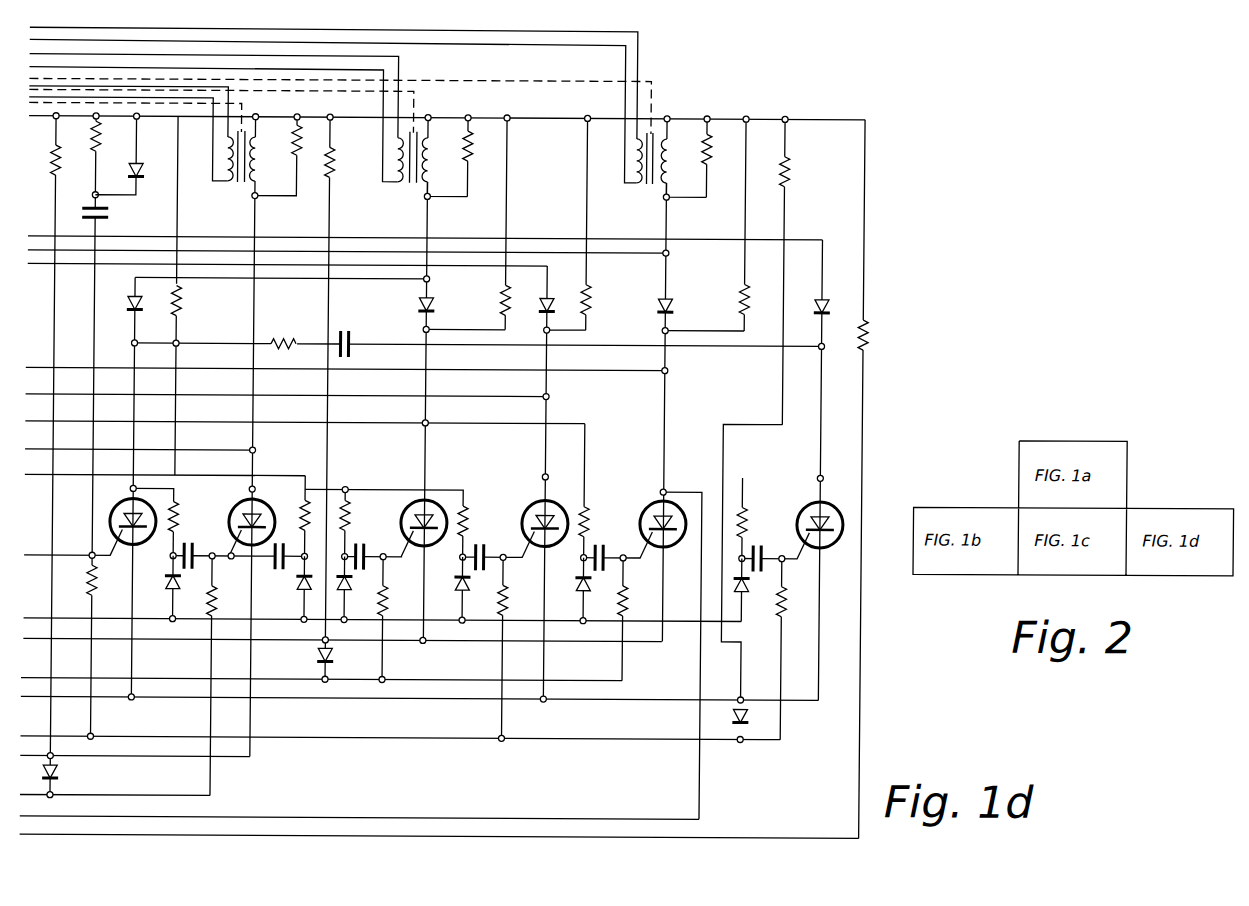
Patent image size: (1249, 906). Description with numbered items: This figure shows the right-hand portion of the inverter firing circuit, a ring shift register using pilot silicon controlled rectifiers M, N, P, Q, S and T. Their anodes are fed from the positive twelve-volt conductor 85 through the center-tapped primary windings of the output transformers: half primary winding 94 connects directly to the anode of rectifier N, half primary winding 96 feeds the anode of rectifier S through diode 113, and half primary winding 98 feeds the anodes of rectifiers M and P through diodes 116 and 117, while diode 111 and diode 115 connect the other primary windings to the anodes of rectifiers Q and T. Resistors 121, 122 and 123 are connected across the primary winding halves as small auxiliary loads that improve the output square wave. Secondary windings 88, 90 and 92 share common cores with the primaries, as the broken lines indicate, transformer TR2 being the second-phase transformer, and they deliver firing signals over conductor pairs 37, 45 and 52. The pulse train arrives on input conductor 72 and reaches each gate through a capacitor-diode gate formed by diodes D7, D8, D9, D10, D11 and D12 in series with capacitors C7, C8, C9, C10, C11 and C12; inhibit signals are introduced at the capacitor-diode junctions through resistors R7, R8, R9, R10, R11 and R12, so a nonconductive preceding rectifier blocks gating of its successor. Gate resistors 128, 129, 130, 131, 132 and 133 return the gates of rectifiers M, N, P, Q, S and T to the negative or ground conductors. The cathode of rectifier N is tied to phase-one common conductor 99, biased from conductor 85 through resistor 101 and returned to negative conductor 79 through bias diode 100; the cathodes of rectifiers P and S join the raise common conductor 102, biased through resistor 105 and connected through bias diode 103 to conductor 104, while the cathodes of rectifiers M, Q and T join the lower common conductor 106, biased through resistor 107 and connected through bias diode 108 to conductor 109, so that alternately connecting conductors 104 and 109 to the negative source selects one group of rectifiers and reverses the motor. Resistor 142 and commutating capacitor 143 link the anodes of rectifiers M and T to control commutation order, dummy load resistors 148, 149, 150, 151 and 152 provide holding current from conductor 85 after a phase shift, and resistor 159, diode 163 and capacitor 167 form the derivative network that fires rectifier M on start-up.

The conductor pair 45 is at (643, 39).
The conductor pair 52 is at (398, 58).
The pair of conductors 37 is at (239, 88).
The output transformer TR2 is at (548, 80).
The positive conductor 85 is at (541, 116).
The resistor 101 is at (51, 166).
The resistor 159 is at (90, 156).
The diode 163 is at (138, 168).
The capacitor 167 is at (118, 215).
The secondary winding 88 is at (225, 183).
The half primary winding 94 is at (258, 156).
The resistor 121 is at (292, 160).
The bias resistor 105 is at (332, 178).
The secondary winding 92 is at (395, 183).
The half primary winding 98 is at (430, 168).
The resistor 122 is at (470, 155).
The secondary winding 90 is at (634, 183).
The half primary winding 96 is at (668, 168).
The resistor 123 is at (706, 155).
The bias resistor 107 is at (792, 170).
The diode 116 is at (131, 294).
The dummy load resistor 148 is at (184, 300).
The resistor 142 is at (284, 331).
The commutating capacitor 143 is at (343, 329).
The diode 117 is at (419, 301).
The dummy load resistor 149 is at (498, 297).
The diode 111 is at (552, 302).
The dummy load resistor 150 is at (590, 290).
The diode 113 is at (658, 306).
The dummy load resistor 151 is at (738, 296).
The diode 115 is at (826, 304).
The dummy load resistor 152 is at (869, 318).
The pilot silicon controlled rectifier M is at (123, 497).
The pilot silicon controlled rectifier N is at (244, 498).
The pilot silicon controlled rectifier P is at (405, 508).
The pilot silicon controlled rectifier Q is at (540, 499).
The pilot silicon controlled rectifier S is at (660, 497).
The pilot silicon controlled rectifier T is at (812, 497).
The resistor R7 is at (181, 518).
The resistor R8 is at (302, 502).
The resistor R9 is at (351, 515).
The resistor R10 is at (471, 508).
The resistor R11 is at (590, 520).
The resistor R12 is at (750, 517).
The capacitor C7 is at (192, 545).
The capacitor C8 is at (278, 572).
The capacitor C9 is at (366, 547).
The capacitor C10 is at (485, 543).
The capacitor C11 is at (606, 543).
The capacitor C12 is at (764, 543).
The diode D7 is at (168, 591).
The diode D8 is at (297, 591).
The diode D9 is at (349, 593).
The diode D10 is at (457, 591).
The diode D11 is at (579, 591).
The diode D12 is at (743, 604).
The gate resistor 128 is at (86, 582).
The gate resistor 129 is at (217, 601).
The gate resistor 130 is at (389, 594).
The gate resistor 131 is at (511, 590).
The gate resistor 132 is at (631, 597).
The gate resistor 133 is at (785, 608).
The input conductor 72 is at (33, 614).
The raise common conductor 102 is at (186, 650).
The bias diode 103 is at (317, 654).
The conductor 104 is at (460, 668).
The lower common conductor 106 is at (448, 700).
The bias diode 108 is at (745, 714).
The conductor 109 is at (355, 740).
The phase I common conductor 99 is at (251, 758).
The negative conductor 79 is at (168, 796).
The bias diode 100 is at (58, 774).